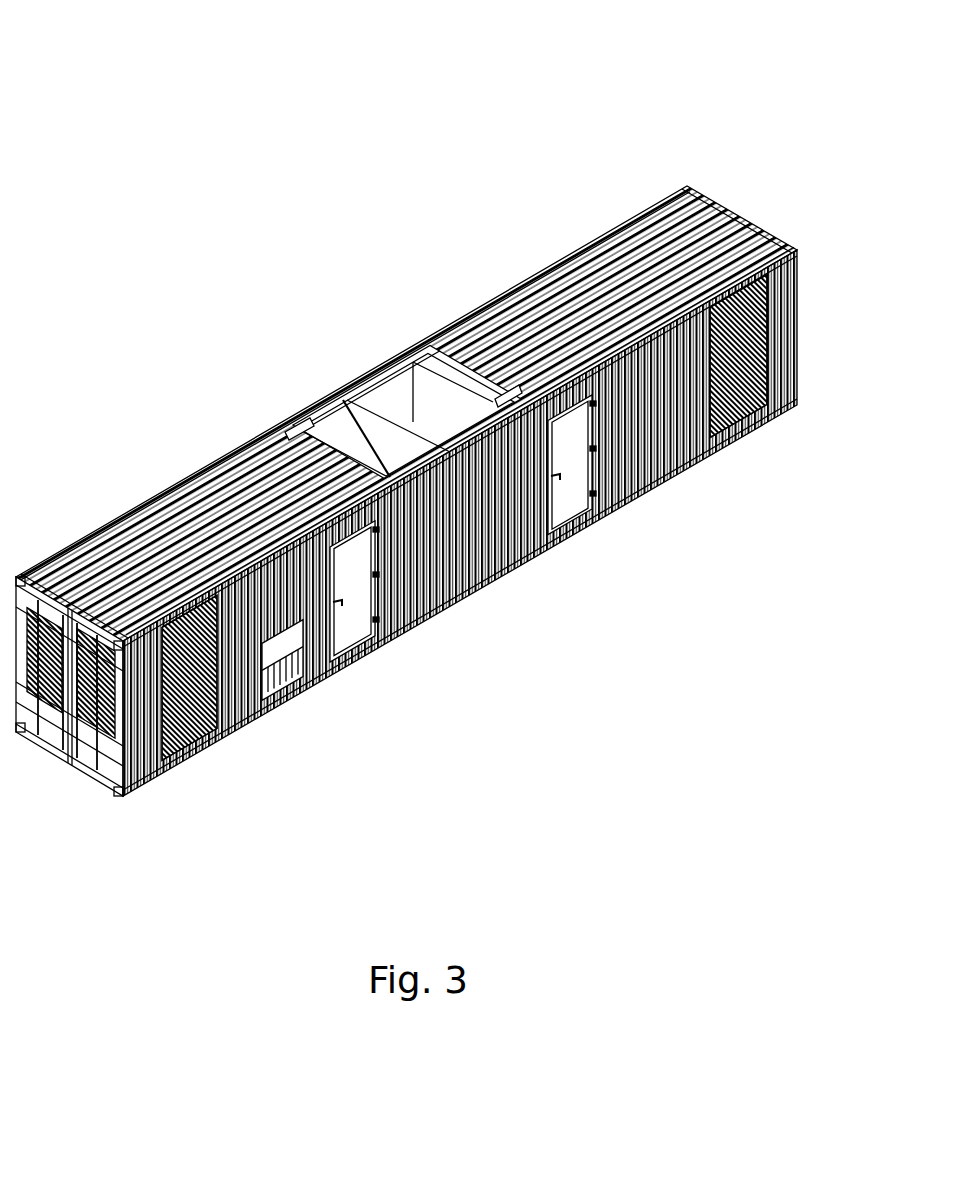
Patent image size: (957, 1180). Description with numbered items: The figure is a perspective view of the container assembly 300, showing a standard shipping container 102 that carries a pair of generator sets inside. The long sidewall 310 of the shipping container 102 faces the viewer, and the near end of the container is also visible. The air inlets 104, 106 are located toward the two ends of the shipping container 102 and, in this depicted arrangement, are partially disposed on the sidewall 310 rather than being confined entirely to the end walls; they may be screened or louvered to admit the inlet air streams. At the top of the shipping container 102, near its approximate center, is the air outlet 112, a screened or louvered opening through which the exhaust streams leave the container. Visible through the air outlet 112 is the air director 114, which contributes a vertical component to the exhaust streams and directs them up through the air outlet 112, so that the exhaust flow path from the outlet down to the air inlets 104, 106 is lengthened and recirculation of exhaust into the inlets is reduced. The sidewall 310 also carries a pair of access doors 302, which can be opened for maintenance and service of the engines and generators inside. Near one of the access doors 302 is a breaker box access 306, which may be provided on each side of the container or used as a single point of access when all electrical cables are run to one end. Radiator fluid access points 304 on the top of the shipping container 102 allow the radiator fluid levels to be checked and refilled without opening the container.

The modular data center system 300 is at (91, 68).
The shipping container 102 is at (630, 221).
The air inlet 104 is at (742, 437).
The air inlet 106 is at (207, 737).
The air outlet 112 is at (388, 333).
The air director 114 is at (364, 425).
The access door 302 is at (571, 510).
The radiator fluid access point 304 is at (503, 388).
The breaker box access 306 is at (283, 665).
The sidewall 310 is at (470, 575).